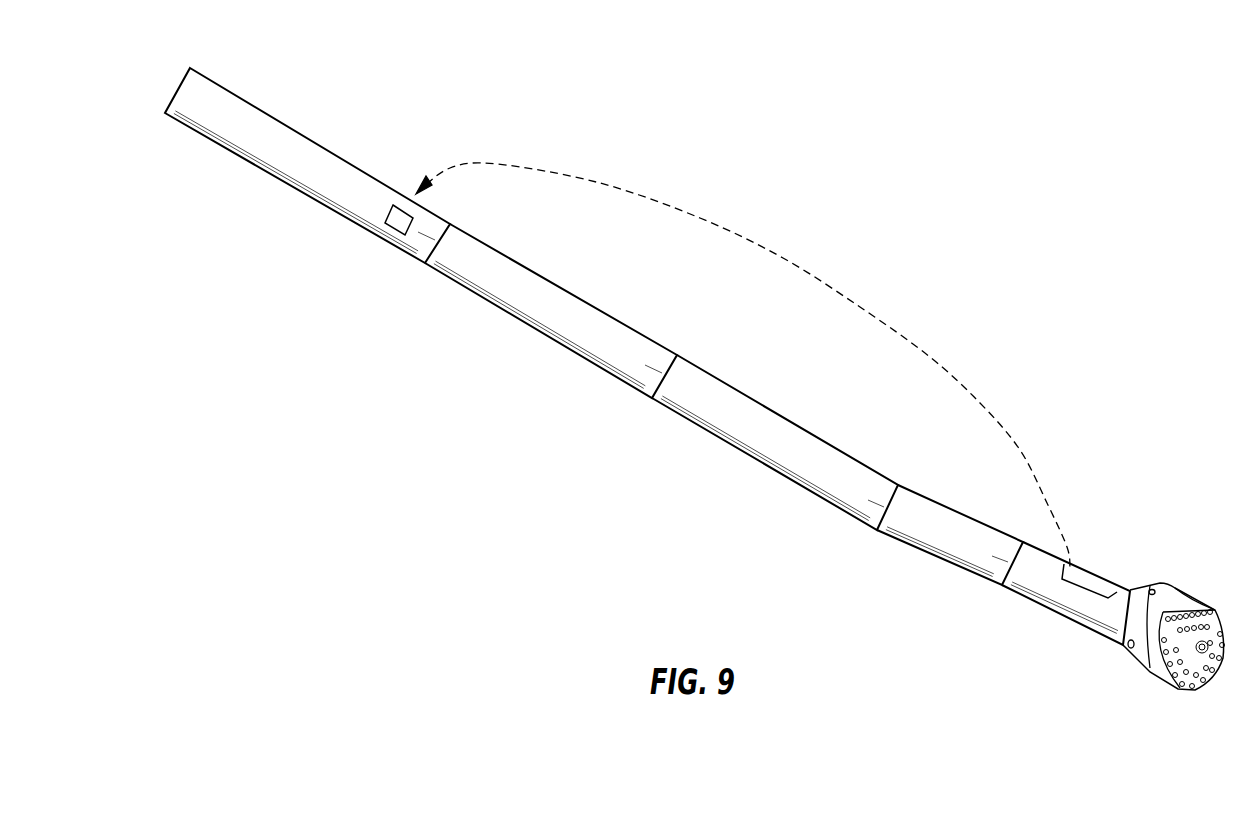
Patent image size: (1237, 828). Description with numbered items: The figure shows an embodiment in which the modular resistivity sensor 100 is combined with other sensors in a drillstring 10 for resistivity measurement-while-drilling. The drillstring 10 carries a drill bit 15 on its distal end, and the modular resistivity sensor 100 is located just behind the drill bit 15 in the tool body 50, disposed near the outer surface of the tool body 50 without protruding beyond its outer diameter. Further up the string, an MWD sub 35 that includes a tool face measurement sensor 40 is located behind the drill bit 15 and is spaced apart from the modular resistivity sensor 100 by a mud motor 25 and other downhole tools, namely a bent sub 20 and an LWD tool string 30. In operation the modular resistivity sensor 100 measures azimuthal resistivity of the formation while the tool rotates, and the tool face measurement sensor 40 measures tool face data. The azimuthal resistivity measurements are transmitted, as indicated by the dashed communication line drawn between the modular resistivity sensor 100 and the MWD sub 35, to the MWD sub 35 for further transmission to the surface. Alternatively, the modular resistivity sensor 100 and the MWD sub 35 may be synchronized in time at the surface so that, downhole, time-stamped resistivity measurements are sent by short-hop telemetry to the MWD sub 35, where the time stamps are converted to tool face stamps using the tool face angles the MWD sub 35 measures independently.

The drillstring 10 is at (1140, 112).
The drill bit 15 is at (1183, 592).
The bent sub 20 is at (938, 558).
The mud motor 25 is at (765, 465).
The LWD tool string 30 is at (538, 333).
The MWD sub 35 is at (320, 145).
The tool face measurement sensor 40 is at (393, 233).
The tool body 50 is at (1057, 612).
The modular resistivity sensor 100 is at (1093, 568).